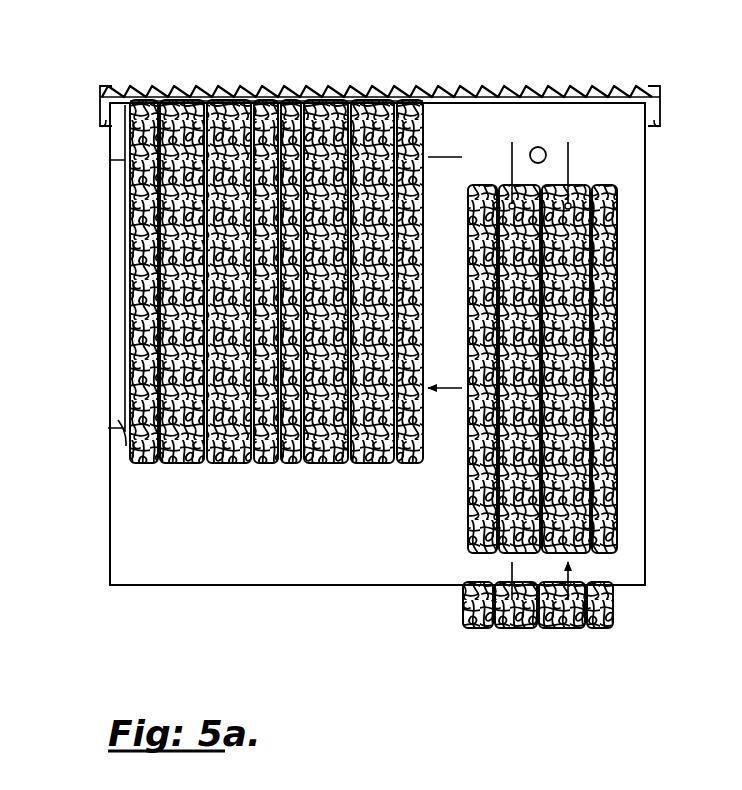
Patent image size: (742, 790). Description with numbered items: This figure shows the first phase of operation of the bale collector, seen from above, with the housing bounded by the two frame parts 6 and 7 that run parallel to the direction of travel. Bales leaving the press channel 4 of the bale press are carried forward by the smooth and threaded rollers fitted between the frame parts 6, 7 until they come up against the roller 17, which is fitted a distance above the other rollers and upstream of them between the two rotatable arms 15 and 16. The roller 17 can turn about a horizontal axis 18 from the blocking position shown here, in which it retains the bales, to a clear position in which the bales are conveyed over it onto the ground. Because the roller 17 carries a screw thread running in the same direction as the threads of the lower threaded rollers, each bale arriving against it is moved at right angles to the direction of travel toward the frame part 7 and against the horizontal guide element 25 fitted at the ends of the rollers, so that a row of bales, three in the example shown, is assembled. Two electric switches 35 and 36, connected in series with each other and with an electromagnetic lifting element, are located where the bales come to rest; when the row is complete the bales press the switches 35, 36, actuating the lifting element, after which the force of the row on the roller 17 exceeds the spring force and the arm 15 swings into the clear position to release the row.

The press channel 4 is at (616, 612).
The frame part 6 is at (646, 478).
The frame part 7 is at (108, 372).
The rotatable arm 15 is at (662, 100).
The rotatable arm 16 is at (100, 108).
The roller 17 is at (505, 85).
The horizontal axis 18 is at (98, 125).
The horizontal guide element 25 is at (190, 270).
The electric switch 35 is at (354, 98).
The electric switch 36 is at (544, 148).